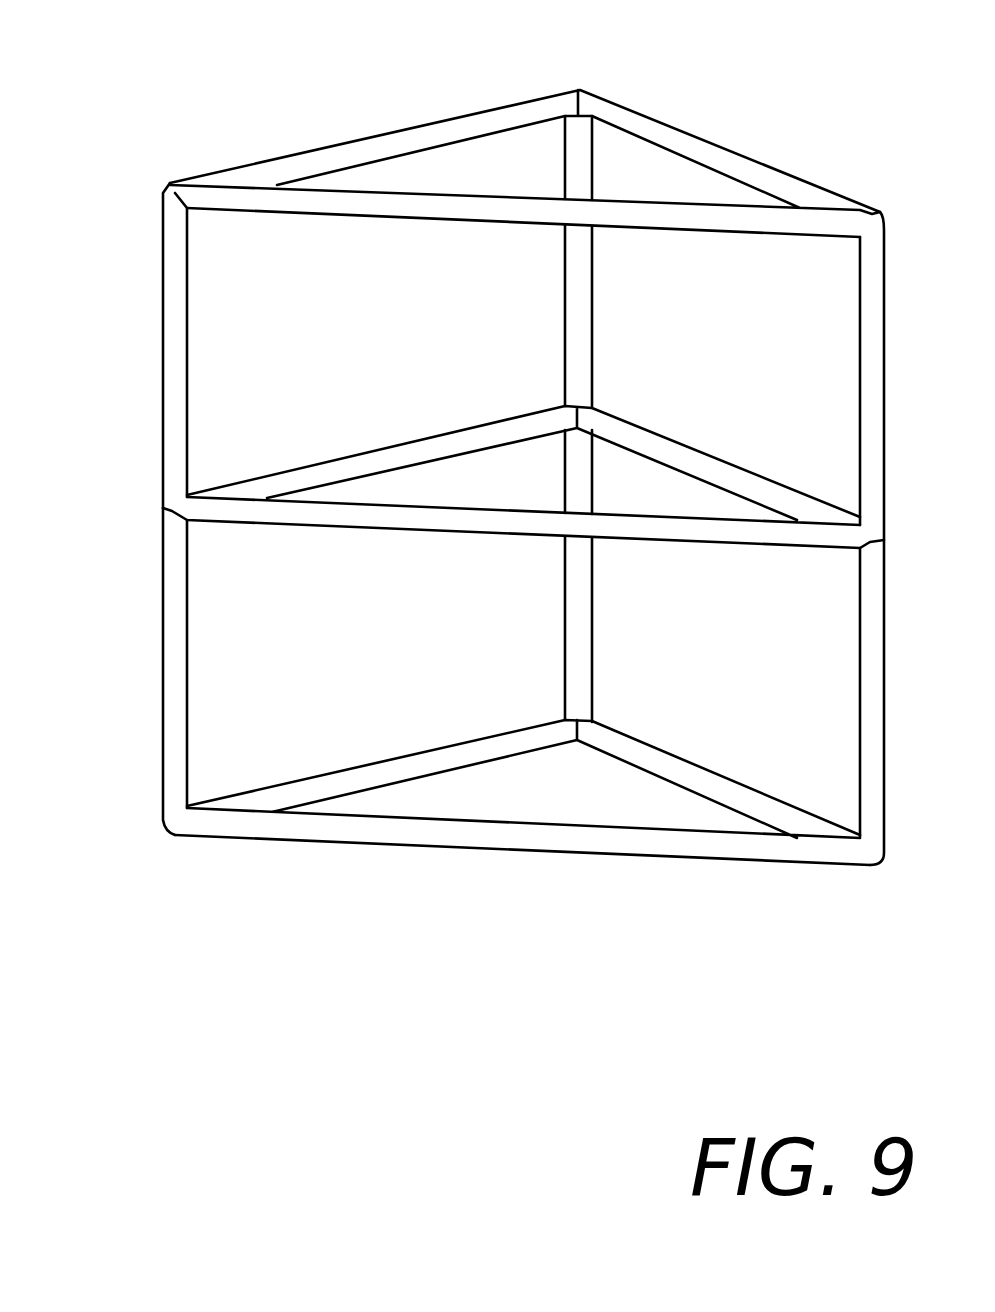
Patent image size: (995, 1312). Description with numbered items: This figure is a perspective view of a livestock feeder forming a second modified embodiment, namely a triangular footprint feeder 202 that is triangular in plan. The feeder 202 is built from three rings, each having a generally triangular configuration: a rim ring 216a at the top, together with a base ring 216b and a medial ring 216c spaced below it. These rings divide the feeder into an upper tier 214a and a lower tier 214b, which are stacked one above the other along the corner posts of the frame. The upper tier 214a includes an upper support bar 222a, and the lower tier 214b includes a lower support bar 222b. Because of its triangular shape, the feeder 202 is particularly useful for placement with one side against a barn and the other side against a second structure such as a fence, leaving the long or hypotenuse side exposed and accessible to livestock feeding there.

The triangular footprint feeder 202 is at (308, 98).
The upper tier 214a is at (163, 330).
The lower tier 214b is at (163, 666).
The rim ring 216a is at (508, 103).
The base ring 216b is at (508, 425).
The medial ring 216c is at (508, 733).
The upper support bar 222a is at (860, 322).
The lower support bar 222b is at (857, 650).